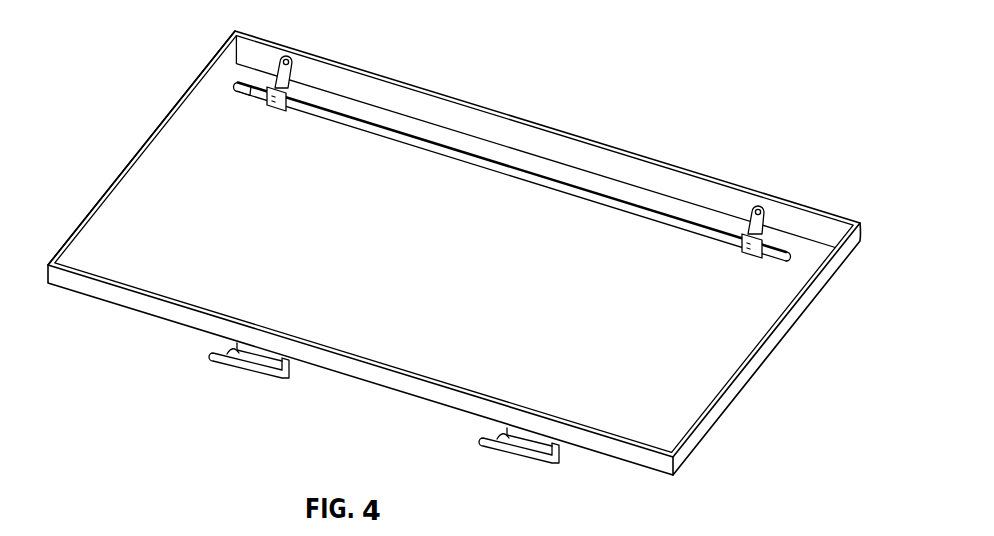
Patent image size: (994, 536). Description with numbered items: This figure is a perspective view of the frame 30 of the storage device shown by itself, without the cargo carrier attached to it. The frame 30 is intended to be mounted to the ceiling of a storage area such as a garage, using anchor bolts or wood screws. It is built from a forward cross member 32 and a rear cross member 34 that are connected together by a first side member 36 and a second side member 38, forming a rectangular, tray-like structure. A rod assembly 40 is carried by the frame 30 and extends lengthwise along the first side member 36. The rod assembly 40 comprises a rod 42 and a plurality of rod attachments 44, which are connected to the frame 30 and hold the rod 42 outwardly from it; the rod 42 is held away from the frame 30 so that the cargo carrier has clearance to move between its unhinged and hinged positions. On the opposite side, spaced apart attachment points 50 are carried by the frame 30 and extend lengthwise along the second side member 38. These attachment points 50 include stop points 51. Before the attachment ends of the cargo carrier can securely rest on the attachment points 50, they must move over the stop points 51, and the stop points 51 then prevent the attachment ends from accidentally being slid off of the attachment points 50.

The frame 30 is at (861, 223).
The forward cross member 32 is at (781, 348).
The rear cross member 34 is at (152, 147).
The first side member 36 is at (612, 158).
The second side member 38 is at (387, 385).
The rod assembly 40 is at (236, 86).
The rod 42 is at (513, 164).
The rod attachment 44 is at (291, 70).
The attachment point 50 is at (232, 369).
The stop point 51 is at (233, 347).